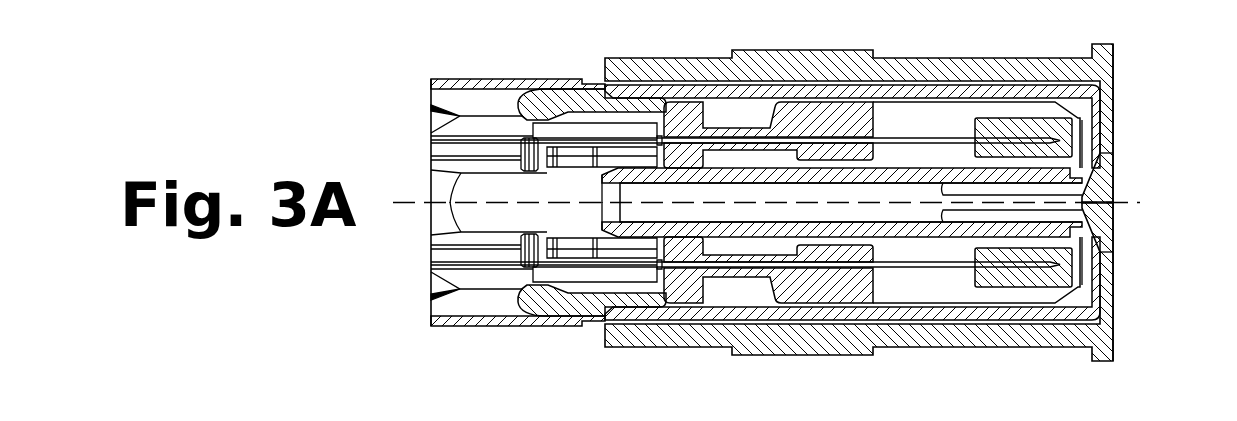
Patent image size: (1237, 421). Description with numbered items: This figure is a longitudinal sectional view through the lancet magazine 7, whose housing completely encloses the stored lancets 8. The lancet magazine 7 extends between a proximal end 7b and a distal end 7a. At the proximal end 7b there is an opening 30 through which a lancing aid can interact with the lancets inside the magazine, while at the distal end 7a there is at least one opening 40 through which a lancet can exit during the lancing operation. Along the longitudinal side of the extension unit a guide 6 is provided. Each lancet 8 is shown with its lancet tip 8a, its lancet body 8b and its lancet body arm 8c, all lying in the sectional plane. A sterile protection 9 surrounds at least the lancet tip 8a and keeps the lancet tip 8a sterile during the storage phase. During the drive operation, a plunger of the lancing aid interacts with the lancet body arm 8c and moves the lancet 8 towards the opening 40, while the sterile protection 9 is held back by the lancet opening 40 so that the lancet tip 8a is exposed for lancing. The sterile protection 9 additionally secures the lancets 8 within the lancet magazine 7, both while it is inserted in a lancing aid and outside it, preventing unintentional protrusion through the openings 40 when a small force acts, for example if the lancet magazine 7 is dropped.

The guide 6 is at (803, 62).
The lancet magazine 7 is at (673, 354).
The distal end of lancet magazine 7a is at (1073, 285).
The proximal end of lancet magazine 7b is at (432, 107).
The lancet 8 is at (941, 138).
The lancet tip 8a is at (1060, 137).
The lancet body 8b is at (830, 117).
The lancet body arm 8c is at (541, 300).
The sterile protection 9 is at (1003, 127).
The proximal opening of lancet magazine 30 is at (432, 268).
The distal opening of lancet magazine 40 is at (1115, 263).